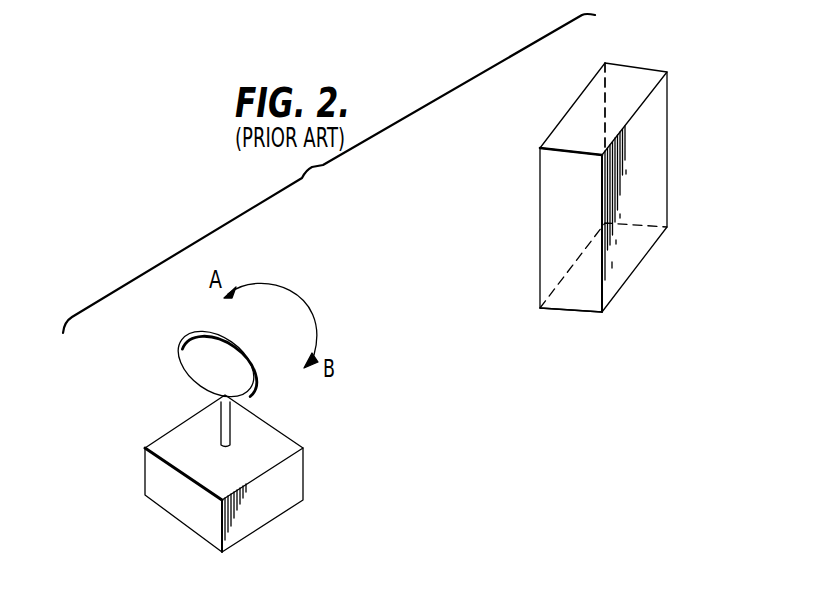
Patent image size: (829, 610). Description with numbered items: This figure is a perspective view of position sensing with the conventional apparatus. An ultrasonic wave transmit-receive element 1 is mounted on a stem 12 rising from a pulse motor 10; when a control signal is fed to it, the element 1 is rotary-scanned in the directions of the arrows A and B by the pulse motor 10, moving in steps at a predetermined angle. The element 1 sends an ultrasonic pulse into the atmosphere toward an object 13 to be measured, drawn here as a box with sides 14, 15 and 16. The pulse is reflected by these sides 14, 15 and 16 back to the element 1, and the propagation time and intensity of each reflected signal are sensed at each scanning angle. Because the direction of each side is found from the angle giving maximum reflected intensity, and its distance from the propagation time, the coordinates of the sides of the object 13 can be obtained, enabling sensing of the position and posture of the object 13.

The ultrasonic wave transmit-receive element 1 is at (237, 382).
The pulse motor 10 is at (280, 497).
The stem / shaft 12 is at (228, 434).
The object 13 is at (570, 302).
The side 14 is at (539, 202).
The side 15 is at (603, 195).
The side 16 is at (603, 98).